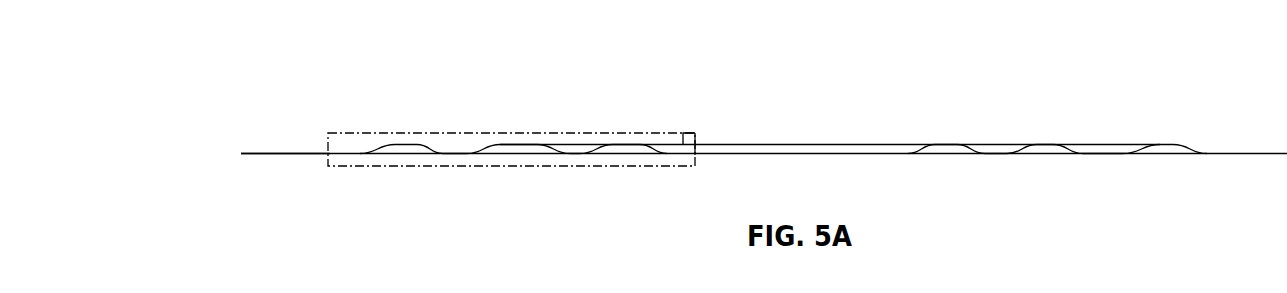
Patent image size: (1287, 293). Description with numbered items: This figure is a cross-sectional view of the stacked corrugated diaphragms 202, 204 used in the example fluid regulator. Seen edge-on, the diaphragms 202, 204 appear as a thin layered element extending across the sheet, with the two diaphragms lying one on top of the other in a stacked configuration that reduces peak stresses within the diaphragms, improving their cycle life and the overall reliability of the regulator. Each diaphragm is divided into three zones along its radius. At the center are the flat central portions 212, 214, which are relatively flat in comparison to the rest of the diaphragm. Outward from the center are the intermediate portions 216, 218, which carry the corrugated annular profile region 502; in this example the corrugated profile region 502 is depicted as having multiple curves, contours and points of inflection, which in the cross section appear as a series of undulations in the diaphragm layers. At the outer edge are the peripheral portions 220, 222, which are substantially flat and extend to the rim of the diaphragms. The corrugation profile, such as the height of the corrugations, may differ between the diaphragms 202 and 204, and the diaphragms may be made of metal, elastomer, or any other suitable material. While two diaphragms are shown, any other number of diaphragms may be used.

The diaphragm 202 is at (764, 113).
The diaphragm 204 is at (983, 108).
The flat central portion 212 is at (953, 103).
The flat central portion 214 is at (728, 155).
The intermediate portion 216 is at (513, 101).
The intermediate portion 218 is at (522, 145).
The peripheral portion 220 is at (303, 93).
The peripheral portion 222 is at (298, 153).
The corrugated annular profile region 502 is at (375, 167).